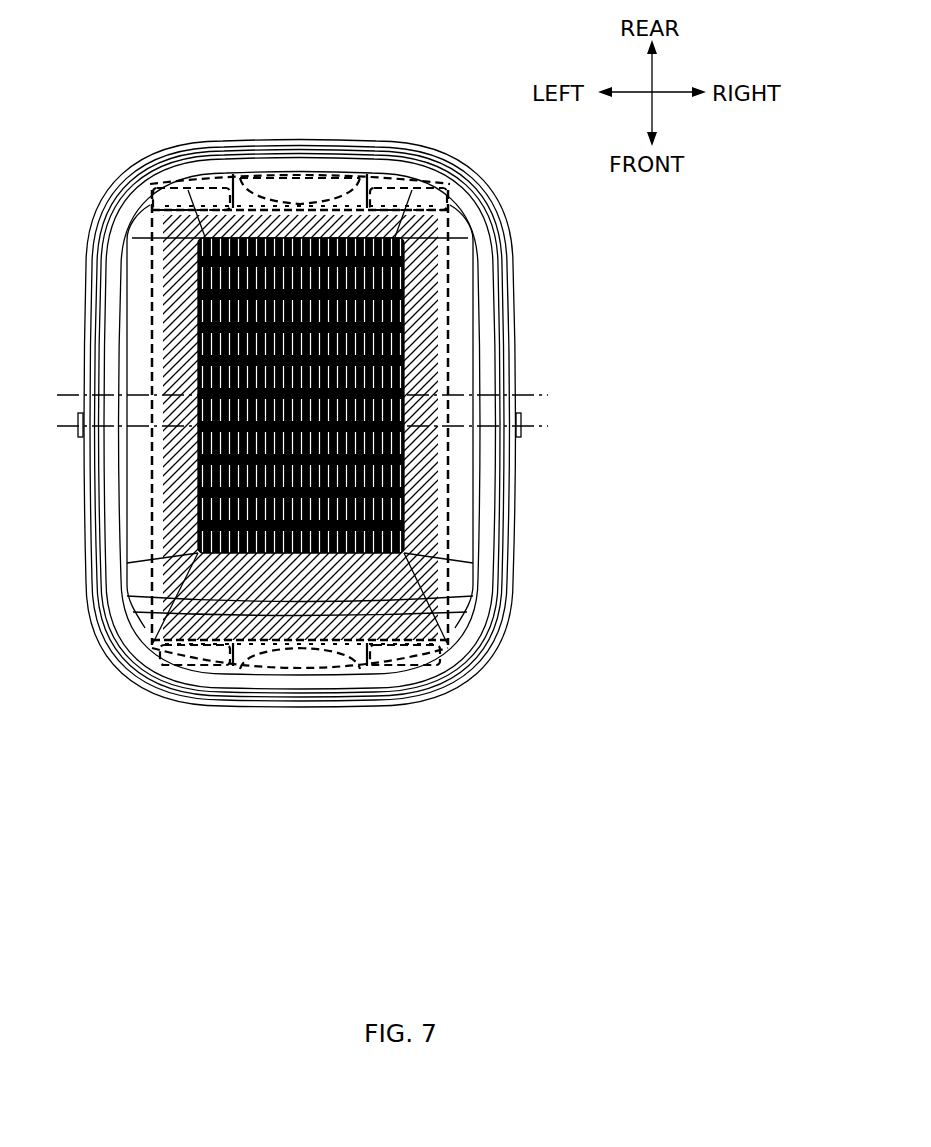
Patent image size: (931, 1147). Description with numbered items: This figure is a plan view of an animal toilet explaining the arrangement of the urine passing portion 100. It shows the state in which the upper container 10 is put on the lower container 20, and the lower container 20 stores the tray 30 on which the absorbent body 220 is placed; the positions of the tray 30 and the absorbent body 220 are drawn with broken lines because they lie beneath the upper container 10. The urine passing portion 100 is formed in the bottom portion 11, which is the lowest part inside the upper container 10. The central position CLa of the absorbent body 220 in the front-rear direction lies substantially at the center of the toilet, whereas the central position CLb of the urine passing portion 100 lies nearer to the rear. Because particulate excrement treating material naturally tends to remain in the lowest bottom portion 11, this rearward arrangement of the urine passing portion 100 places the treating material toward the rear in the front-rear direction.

The upper container 10 is at (283, 384).
The lower container 20 is at (111, 136).
The bottom portion 11 is at (395, 427).
The urine passing portion 100 is at (405, 312).
The tray 30 is at (464, 517).
The absorbent body 220 is at (305, 235).
The central position of the absorbent body CLa is at (325, 426).
The central position of the urine passing portion CLb is at (326, 396).